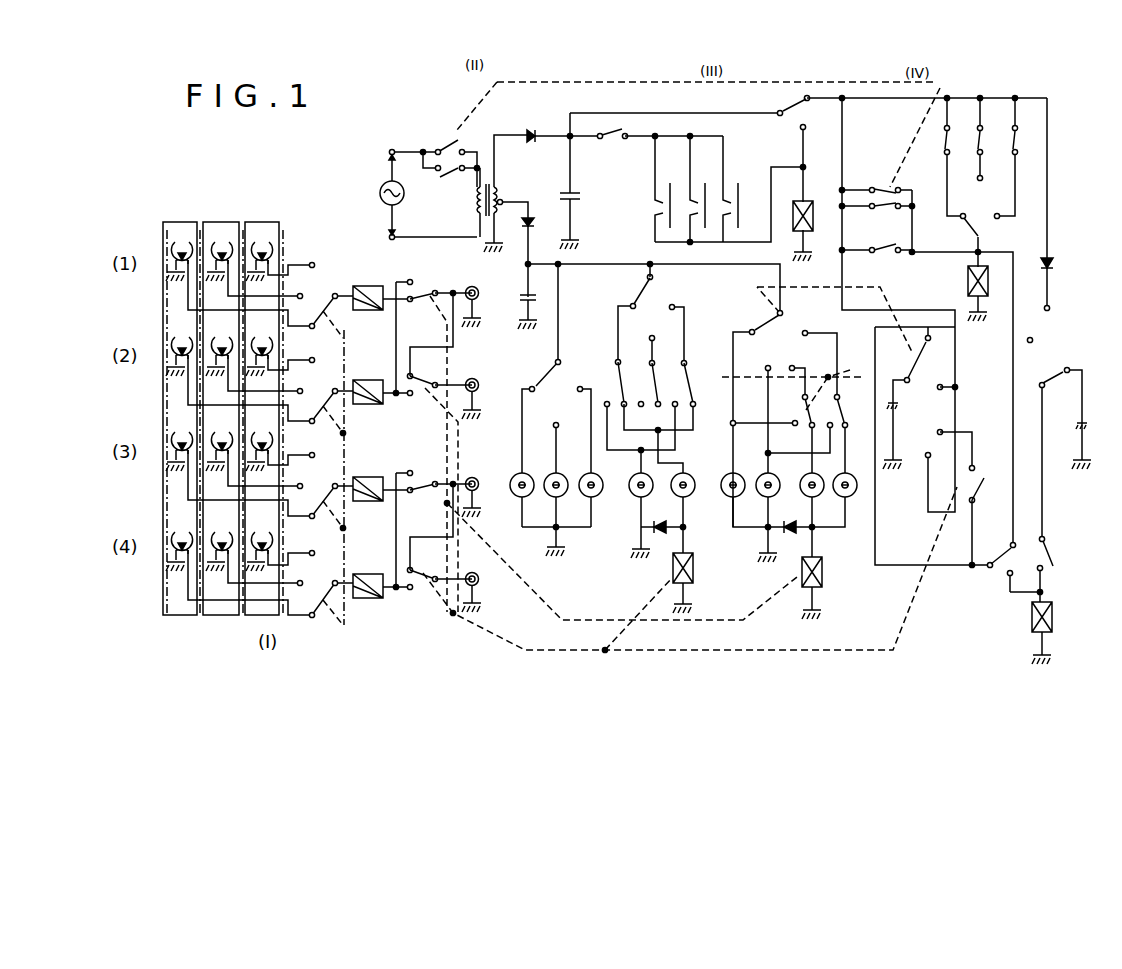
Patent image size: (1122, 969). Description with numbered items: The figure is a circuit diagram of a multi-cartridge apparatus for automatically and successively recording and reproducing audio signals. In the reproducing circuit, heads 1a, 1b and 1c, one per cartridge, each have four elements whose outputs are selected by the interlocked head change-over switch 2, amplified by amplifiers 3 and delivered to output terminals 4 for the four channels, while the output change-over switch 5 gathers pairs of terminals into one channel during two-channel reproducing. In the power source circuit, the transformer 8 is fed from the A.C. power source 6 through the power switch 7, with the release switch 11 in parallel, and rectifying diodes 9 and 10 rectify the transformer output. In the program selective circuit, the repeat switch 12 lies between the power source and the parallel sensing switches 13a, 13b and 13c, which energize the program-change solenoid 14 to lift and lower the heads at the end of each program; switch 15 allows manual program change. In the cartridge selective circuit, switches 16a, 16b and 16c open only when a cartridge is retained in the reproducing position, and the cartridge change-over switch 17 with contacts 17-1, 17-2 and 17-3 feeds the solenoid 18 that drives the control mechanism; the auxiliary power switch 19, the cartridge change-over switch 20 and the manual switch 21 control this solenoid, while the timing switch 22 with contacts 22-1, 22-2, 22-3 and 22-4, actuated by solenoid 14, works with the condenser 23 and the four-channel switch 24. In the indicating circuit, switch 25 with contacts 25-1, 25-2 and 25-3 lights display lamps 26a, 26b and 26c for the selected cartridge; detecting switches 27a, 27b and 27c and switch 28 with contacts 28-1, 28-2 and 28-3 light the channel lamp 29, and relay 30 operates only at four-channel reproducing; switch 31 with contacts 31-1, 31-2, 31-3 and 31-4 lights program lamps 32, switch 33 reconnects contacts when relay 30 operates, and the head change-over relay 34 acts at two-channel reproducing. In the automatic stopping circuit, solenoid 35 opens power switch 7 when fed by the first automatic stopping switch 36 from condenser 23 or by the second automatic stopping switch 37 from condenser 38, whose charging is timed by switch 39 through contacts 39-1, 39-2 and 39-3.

The head 1a is at (196, 222).
The head 1b is at (248, 222).
The head 1c is at (288, 222).
The head change-over switch 2 is at (340, 598).
The amplifier 3 is at (368, 597).
The terminal 4 is at (468, 288).
The output change-over switch 5 is at (670, 461).
The A.C. power source 6 is at (382, 188).
The power switch 7 is at (460, 142).
The transformer 8 is at (477, 210).
The rectifying diode 9 is at (532, 142).
The rectifying diode 10 is at (532, 222).
The release switch 11 is at (456, 178).
The repeat switch 12 is at (614, 138).
The sensing switch 13a is at (655, 212).
The sensing switch 13b is at (690, 226).
The sensing switch 13c is at (726, 226).
The program-change solenoid 14 is at (790, 140).
The switch 15 is at (787, 106).
The switch 16a is at (943, 140).
The switch 16b is at (978, 142).
The switch 16c is at (1010, 142).
The cartridge change-over switch 17 is at (970, 230).
The contact 17-1 is at (946, 223).
The contact 17-2 is at (969, 189).
The contact 17-3 is at (1005, 224).
The solenoid 18 is at (948, 292).
The auxiliary power switch 19 is at (886, 188).
The cartridge change-over switch 20 is at (890, 210).
The switch 21 is at (888, 254).
The switch 22 is at (911, 378).
The contact 22-1 is at (908, 342).
The contact 22-2 is at (939, 378).
The contact 22-3 is at (945, 448).
The contact 22-4 is at (912, 459).
The condenser 23 is at (899, 408).
The switch 24 is at (980, 492).
The switch 25 is at (552, 358).
The contact 25-1 is at (516, 383).
The contact 25-2 is at (555, 417).
The contact 25-3 is at (577, 379).
The display lamp 26a is at (520, 498).
The display lamp 26b is at (556, 506).
The display lamp 26c is at (590, 506).
The switch 27a is at (618, 352).
The switch 27b is at (684, 378).
The switch 27c is at (692, 386).
The switch 28 is at (648, 276).
The contact 28-1 is at (617, 302).
The contact 28-2 is at (651, 331).
The contact 28-3 is at (676, 299).
The lamp 29 is at (692, 498).
The relay 30 is at (701, 592).
The switch 31 is at (760, 318).
The contact 31-1 is at (737, 326).
The contact 31-2 is at (761, 361).
The contact 31-3 is at (803, 358).
The contact 31-4 is at (813, 326).
The lamp 32 is at (850, 482).
The switch 33 is at (792, 375).
The head change-over relay 34 is at (822, 578).
The solenoid 35 is at (1003, 612).
The first automatic stopping switch 36 is at (999, 566).
The second automatic stopping switch 37 is at (1046, 544).
The condenser 38 is at (1085, 425).
The switch 39 is at (1056, 380).
The contact 39-1 is at (1028, 378).
The contact 39-2 is at (1047, 344).
The contact 39-3 is at (1063, 312).